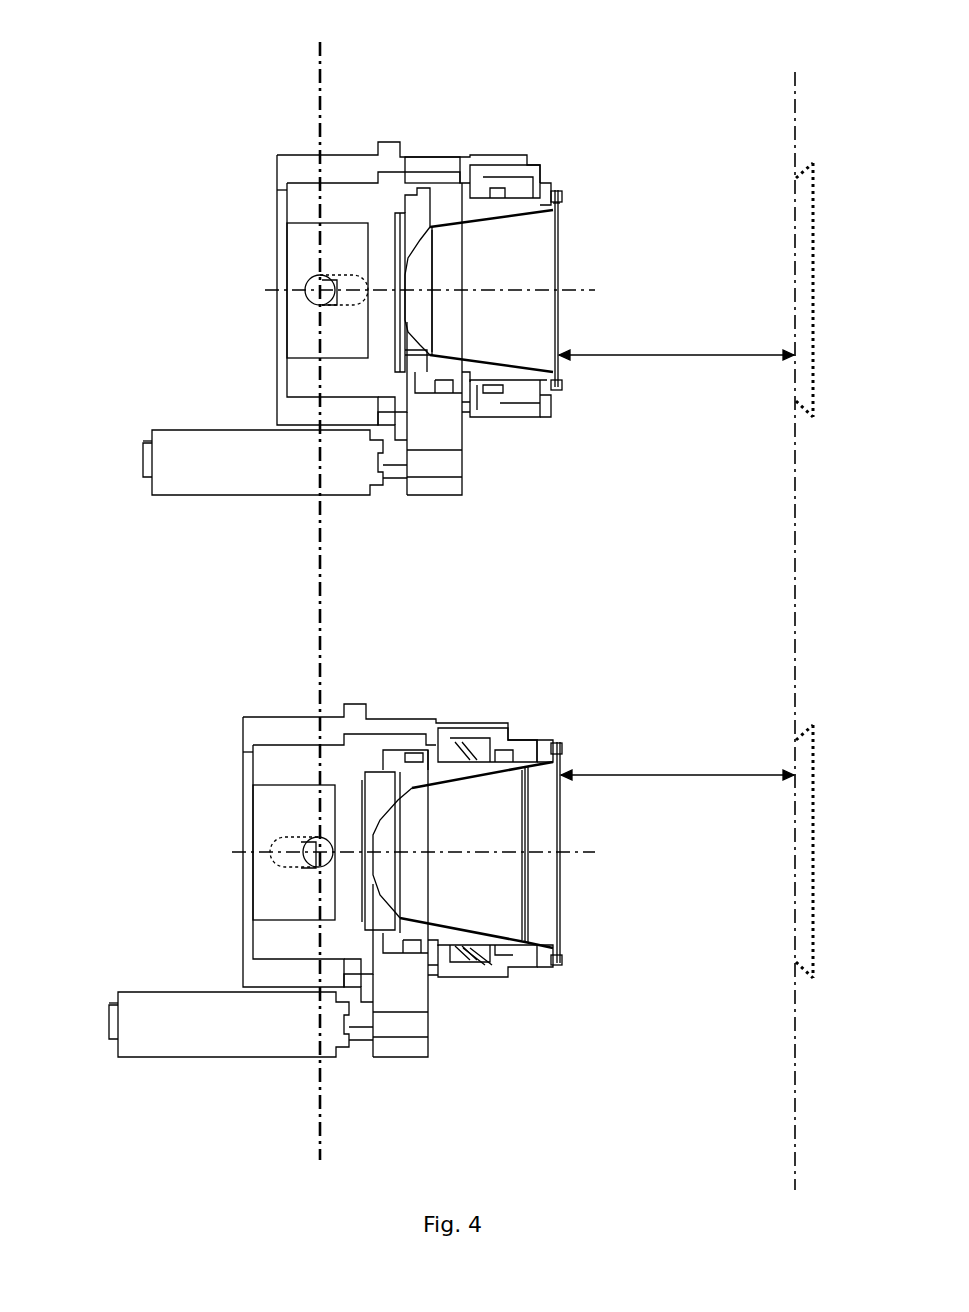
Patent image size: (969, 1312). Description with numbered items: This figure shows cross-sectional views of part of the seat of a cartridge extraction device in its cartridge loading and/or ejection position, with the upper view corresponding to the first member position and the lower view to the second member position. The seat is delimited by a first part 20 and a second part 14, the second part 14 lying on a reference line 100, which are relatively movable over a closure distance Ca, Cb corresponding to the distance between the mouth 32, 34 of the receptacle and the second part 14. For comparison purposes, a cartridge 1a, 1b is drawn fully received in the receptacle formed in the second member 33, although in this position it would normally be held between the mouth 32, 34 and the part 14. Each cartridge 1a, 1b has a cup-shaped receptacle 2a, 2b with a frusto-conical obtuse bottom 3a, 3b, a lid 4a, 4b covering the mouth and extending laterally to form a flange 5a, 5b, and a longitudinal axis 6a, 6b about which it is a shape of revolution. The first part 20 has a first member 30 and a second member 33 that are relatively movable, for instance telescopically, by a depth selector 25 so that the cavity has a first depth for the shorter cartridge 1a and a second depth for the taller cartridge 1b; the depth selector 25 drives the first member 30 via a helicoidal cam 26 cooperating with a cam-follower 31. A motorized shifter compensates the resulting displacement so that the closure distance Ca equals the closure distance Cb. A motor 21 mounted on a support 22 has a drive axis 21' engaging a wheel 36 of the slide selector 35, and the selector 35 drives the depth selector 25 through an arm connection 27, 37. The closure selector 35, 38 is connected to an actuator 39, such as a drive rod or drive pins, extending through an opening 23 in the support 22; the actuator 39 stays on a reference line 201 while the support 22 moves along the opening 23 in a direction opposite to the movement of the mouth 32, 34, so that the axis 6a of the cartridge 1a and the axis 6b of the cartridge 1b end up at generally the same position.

The cartridge 1a is at (612, 232).
The cartridge 1b is at (596, 832).
The cup-shaped receptacle 2a is at (520, 302).
The cup-shaped receptacle 2b is at (500, 827).
The frusto-conical obtuse bottom 3a is at (533, 327).
The frusto-conical obtuse bottom 3b is at (500, 890).
The lid 4a is at (560, 354).
The lid 4b is at (561, 924).
The flange 5a is at (562, 388).
The flange 5b is at (562, 950).
The longitudinal axis 6a is at (588, 289).
The longitudinal axis 6b is at (580, 853).
The second part 14 is at (806, 256).
The first part 20 is at (670, 73).
The motor 21 is at (220, 770).
The drive axis 21' is at (390, 788).
The support 22 is at (428, 177).
The opening 23 is at (361, 274).
The depth selector 25 is at (530, 163).
The helicoidal cam 26 is at (468, 946).
The arm connection 27 is at (490, 158).
The first member 30 is at (534, 190).
The cam-follower 31 is at (490, 407).
The mouth 32 is at (553, 186).
The second member 33 is at (477, 207).
The mouth 34 is at (557, 203).
The slide selector 35 is at (318, 167).
The wheel 36 is at (388, 436).
The axially extending peripheral arm 37 is at (423, 158).
The closure selector 38 is at (317, 284).
The actuator 39 is at (317, 297).
The reference line 100 is at (793, 556).
The reference line 201 is at (319, 612).
The closure distance Ca is at (676, 368).
The closure distance Cb is at (677, 766).